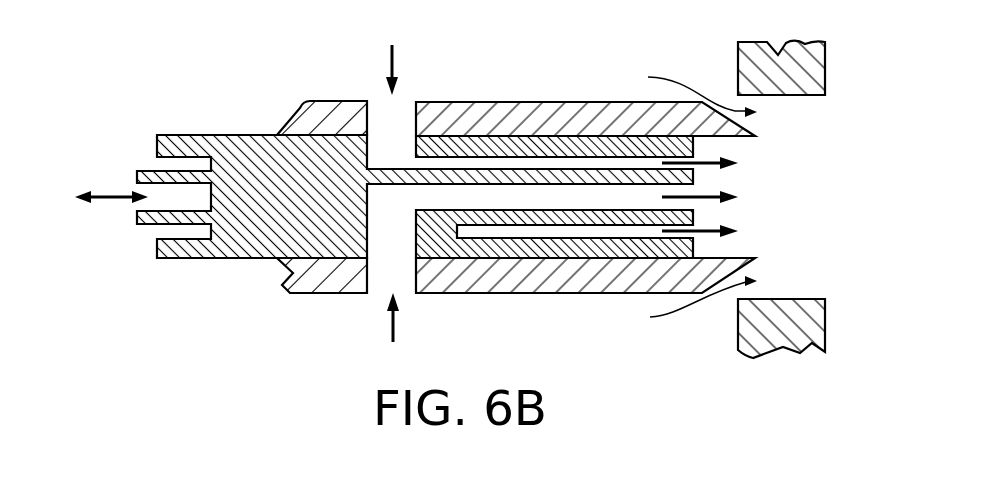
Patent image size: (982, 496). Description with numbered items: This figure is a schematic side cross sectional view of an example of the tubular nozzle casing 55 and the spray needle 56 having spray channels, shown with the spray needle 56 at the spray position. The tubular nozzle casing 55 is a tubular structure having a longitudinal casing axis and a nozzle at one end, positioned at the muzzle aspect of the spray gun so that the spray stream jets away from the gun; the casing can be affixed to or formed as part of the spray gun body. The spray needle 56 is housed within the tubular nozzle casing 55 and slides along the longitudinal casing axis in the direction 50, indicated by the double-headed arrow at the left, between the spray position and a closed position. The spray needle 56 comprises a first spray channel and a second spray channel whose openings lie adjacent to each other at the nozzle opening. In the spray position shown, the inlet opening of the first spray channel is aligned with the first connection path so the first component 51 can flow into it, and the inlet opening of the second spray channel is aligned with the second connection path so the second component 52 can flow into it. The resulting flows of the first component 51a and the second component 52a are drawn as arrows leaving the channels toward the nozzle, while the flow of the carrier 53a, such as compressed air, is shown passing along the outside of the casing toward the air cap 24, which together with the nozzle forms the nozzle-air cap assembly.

The air cap 24 is at (827, 318).
The sliding direction 50 is at (125, 190).
The first component 51 is at (390, 65).
The flow of the first component 51a is at (703, 161).
The second component 52 is at (391, 320).
The flow of the second component 52a is at (703, 194).
The flow of the carrier 53a is at (670, 75).
The tubular nozzle casing 55 is at (560, 90).
The spray needle 56 is at (127, 245).